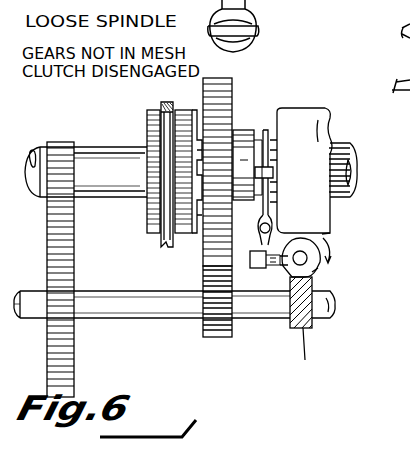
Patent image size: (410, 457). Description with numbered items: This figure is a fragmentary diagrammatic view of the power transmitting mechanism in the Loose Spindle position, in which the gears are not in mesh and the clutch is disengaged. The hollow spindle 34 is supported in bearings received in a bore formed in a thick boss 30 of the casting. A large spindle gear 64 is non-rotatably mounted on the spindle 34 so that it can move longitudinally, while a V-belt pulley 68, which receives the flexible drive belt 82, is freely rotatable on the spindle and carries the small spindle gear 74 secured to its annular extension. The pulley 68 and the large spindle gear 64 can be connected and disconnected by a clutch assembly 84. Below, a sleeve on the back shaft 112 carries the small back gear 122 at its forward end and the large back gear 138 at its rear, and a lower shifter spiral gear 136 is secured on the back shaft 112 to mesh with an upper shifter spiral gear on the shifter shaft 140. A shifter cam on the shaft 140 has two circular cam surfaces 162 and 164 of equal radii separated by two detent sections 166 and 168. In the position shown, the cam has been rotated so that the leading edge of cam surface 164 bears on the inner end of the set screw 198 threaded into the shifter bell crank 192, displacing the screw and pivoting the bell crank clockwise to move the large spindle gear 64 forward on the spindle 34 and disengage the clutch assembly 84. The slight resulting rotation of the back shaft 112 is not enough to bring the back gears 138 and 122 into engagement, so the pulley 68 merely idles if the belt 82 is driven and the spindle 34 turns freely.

The small spindle gear 74 is at (73, 142).
The large back gear 138 is at (76, 352).
The V-belt pulley 68 is at (156, 236).
The flexible drive belt 82 is at (165, 108).
The clutch assembly 84 is at (194, 242).
The back shaft 112 is at (162, 330).
The small back gear 122 is at (233, 332).
The large spindle gear 64 is at (252, 128).
The shifter bell crank 192 is at (271, 220).
The set screw 198 is at (265, 270).
The circular cam surface 164 is at (279, 284).
The boss 30 is at (305, 108).
The hollow spindle 34 is at (345, 143).
The circular cam surface 162 is at (322, 236).
The detent section 166 is at (301, 244).
The shifter shaft 140 is at (320, 262).
The detent section 168 is at (318, 270).
The lower shifter spiral gear 136 is at (312, 321).